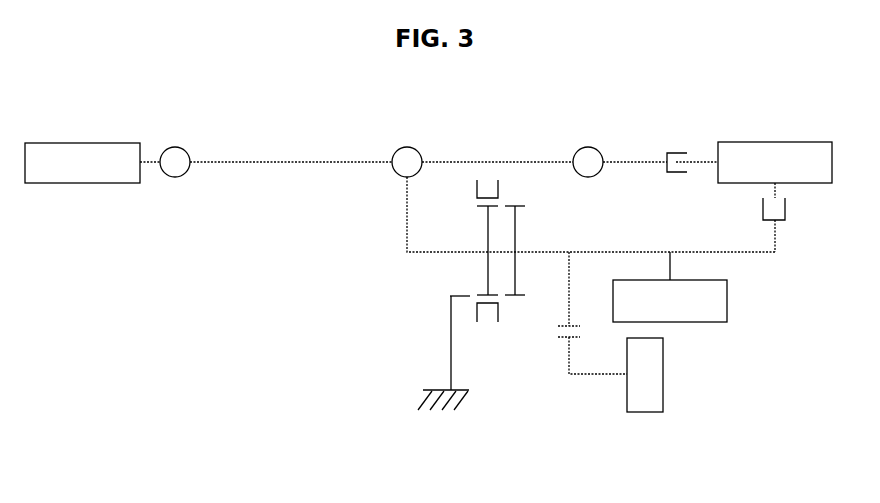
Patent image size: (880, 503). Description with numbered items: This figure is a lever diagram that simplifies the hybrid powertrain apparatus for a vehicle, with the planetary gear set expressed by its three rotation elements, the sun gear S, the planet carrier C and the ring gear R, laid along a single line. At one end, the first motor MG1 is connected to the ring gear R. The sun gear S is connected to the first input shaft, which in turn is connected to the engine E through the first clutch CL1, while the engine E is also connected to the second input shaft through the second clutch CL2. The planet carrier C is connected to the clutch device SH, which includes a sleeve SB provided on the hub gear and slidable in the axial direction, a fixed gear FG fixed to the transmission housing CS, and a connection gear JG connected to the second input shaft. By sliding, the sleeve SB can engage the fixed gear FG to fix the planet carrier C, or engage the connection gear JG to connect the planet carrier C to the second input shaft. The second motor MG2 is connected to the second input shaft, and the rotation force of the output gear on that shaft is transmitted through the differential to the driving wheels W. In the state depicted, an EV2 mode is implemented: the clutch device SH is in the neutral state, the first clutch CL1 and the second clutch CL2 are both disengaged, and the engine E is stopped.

The first motor MG1 is at (82, 163).
The ring gear R is at (175, 162).
The planet carrier C is at (407, 162).
The sun gear S is at (588, 162).
The first clutch CL1 is at (678, 147).
The engine E is at (775, 162).
The second clutch CL2 is at (797, 217).
The sleeve SB is at (477, 188).
The connection gear JG is at (521, 204).
The fixed gear FG is at (452, 296).
The clutch device SH is at (488, 334).
The transmission housing CS is at (446, 411).
The second motor MG2 is at (670, 287).
The driving wheels W is at (645, 375).